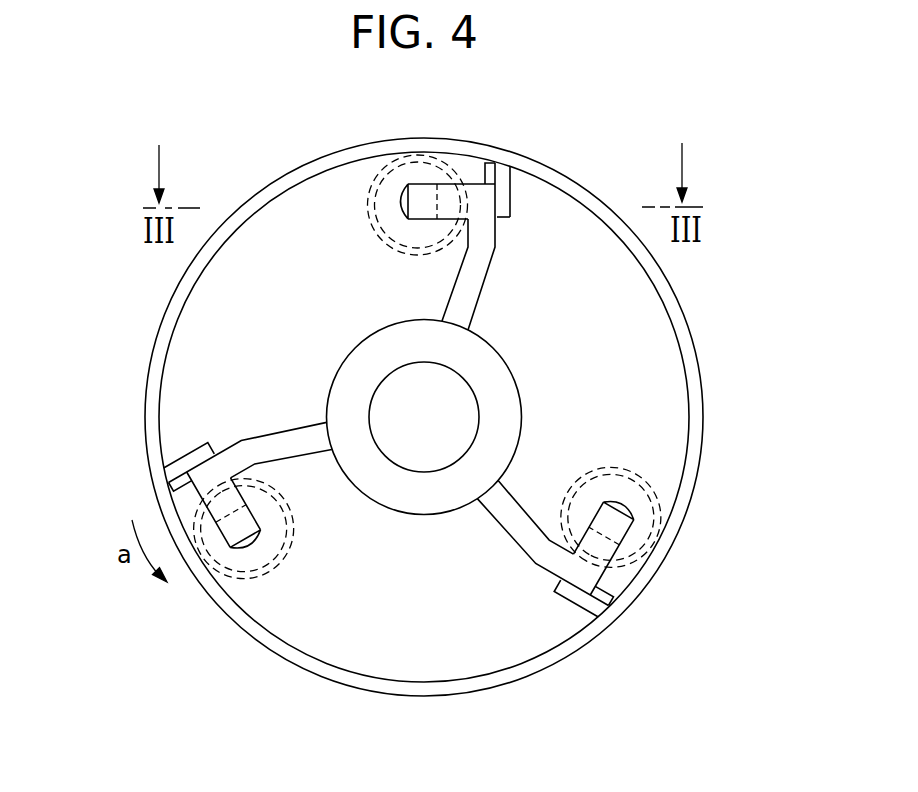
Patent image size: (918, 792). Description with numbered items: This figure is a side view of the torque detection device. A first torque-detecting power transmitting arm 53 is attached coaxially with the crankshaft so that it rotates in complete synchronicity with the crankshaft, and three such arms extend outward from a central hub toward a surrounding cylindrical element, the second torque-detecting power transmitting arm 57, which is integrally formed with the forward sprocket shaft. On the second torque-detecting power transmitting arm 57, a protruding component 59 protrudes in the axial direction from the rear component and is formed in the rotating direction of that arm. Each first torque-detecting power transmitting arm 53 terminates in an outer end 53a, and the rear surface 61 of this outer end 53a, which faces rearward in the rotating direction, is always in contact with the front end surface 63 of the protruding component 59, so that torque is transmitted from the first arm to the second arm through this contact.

The first torque-detecting power transmitting arm 53 is at (475, 263).
The outer end 53a is at (477, 212).
The second torque-detecting power transmitting arm 57 is at (665, 388).
The protruding component 59 is at (503, 182).
The rear surface 61 is at (505, 217).
The front end surface 63 is at (485, 163).